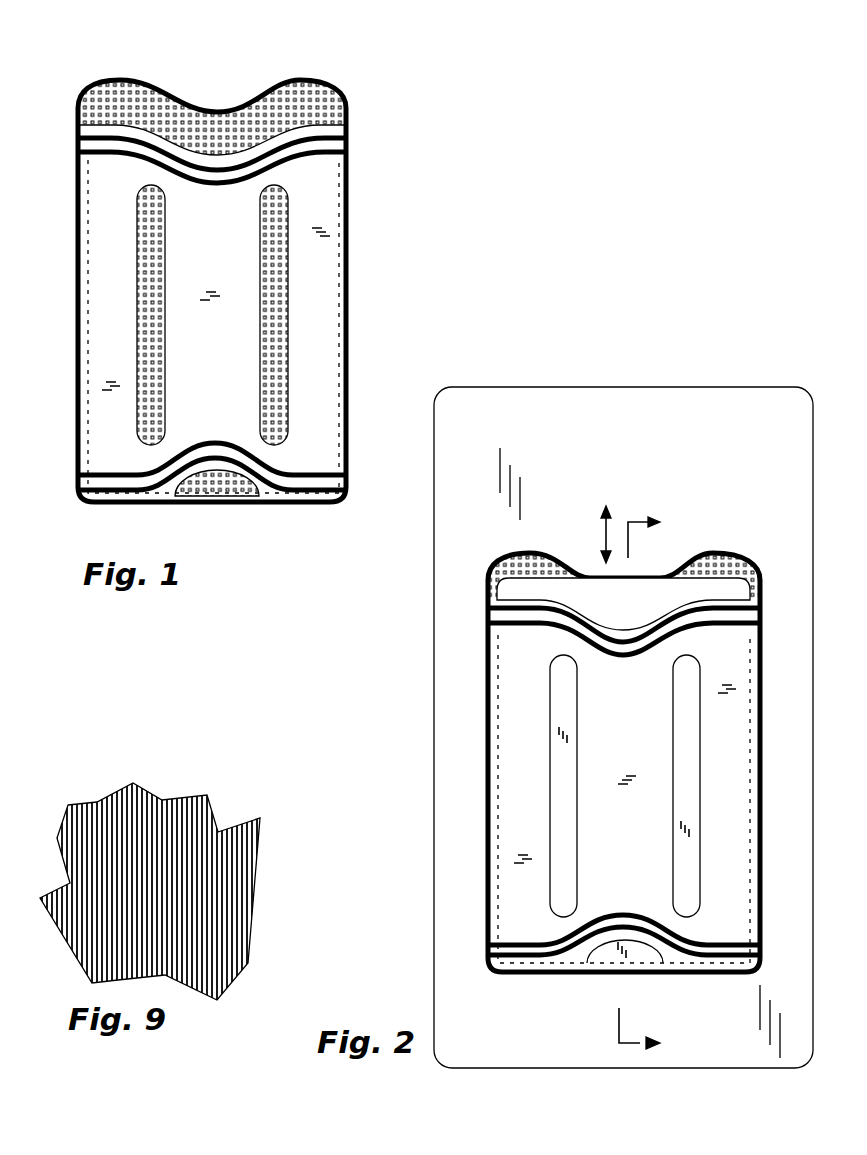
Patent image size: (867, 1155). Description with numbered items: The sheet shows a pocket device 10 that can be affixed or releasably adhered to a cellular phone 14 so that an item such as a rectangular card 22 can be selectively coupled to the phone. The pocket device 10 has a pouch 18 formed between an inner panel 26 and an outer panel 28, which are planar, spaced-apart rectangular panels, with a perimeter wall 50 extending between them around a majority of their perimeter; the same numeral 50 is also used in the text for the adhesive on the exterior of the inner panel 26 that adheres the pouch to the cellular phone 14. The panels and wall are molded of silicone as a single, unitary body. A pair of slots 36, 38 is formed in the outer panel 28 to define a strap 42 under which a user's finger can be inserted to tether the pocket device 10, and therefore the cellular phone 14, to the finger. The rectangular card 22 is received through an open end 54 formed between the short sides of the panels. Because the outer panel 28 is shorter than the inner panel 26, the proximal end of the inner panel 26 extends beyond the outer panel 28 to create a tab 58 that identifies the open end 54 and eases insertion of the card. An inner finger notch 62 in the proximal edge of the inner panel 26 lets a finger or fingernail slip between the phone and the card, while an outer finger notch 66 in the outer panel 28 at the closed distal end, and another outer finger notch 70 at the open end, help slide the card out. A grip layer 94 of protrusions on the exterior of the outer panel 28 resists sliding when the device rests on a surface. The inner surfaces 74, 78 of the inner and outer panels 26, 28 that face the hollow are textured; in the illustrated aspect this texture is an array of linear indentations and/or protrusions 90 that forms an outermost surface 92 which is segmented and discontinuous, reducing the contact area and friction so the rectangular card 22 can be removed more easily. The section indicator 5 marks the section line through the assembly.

In FIG. 1, the pocket device 10 is at (368, 110).
In FIG. 2, the pocket device 10 is at (480, 658).
In FIG. 2, the cellular phone 14 is at (727, 397).
In FIG. 1, the pouch 18 is at (347, 183).
In FIG. 2, the rectangular card 22 is at (703, 587).
In FIG. 1, the inner panel 26 is at (105, 97).
In FIG. 1, the outer panel 28 is at (93, 232).
In FIG. 1, the slot 36 is at (138, 272).
In FIG. 1, the slot 38 is at (287, 270).
In FIG. 1, the strap 42 is at (217, 343).
In FIG. 1, the perimeter wall 50 is at (352, 412).
In FIG. 2, the perimeter wall 50 is at (482, 765).
In FIG. 1, the open end 54 is at (316, 128).
In FIG. 1, the tab 58 is at (133, 85).
In FIG. 1, the inner finger notch 62 is at (177, 102).
In FIG. 1, the outer finger notch 66 is at (247, 493).
In FIG. 1, the outer finger notch 70 is at (220, 115).
In FIG. 9, the inner surface 74 is at (198, 892).
In FIG. 9, the inner surface 78 is at (233, 868).
In FIG. 9, the linear indentations and/or protrusions 90 is at (167, 812).
In FIG. 9, the outermost surface 92 is at (98, 817).
In FIG. 1, the grip layer 94 is at (302, 158).
In FIG. 2, the section line 5- 5 is at (638, 779).